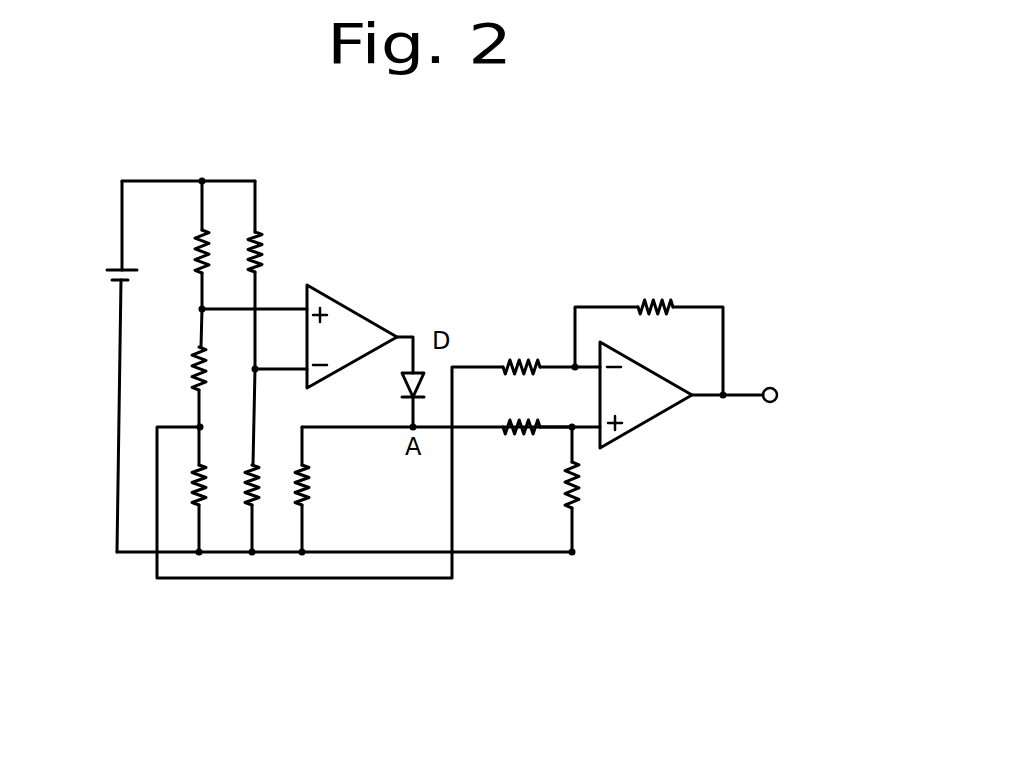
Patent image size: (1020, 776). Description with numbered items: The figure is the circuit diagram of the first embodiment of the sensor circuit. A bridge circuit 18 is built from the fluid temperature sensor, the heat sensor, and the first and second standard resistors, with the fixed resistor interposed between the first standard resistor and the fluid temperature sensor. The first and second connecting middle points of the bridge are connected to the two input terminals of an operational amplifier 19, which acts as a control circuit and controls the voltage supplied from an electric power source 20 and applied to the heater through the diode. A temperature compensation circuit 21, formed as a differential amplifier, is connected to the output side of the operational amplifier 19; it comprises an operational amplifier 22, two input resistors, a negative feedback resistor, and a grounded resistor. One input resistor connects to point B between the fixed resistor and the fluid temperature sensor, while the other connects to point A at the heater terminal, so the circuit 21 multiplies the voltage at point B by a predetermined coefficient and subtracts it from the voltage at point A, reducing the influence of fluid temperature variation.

The bridge circuit 18 is at (233, 505).
The operational amplifier 19 is at (351, 303).
The electric power source 20 is at (103, 277).
The temperature compensation circuit 21 is at (700, 381).
The operational amplifier 22 is at (640, 425).